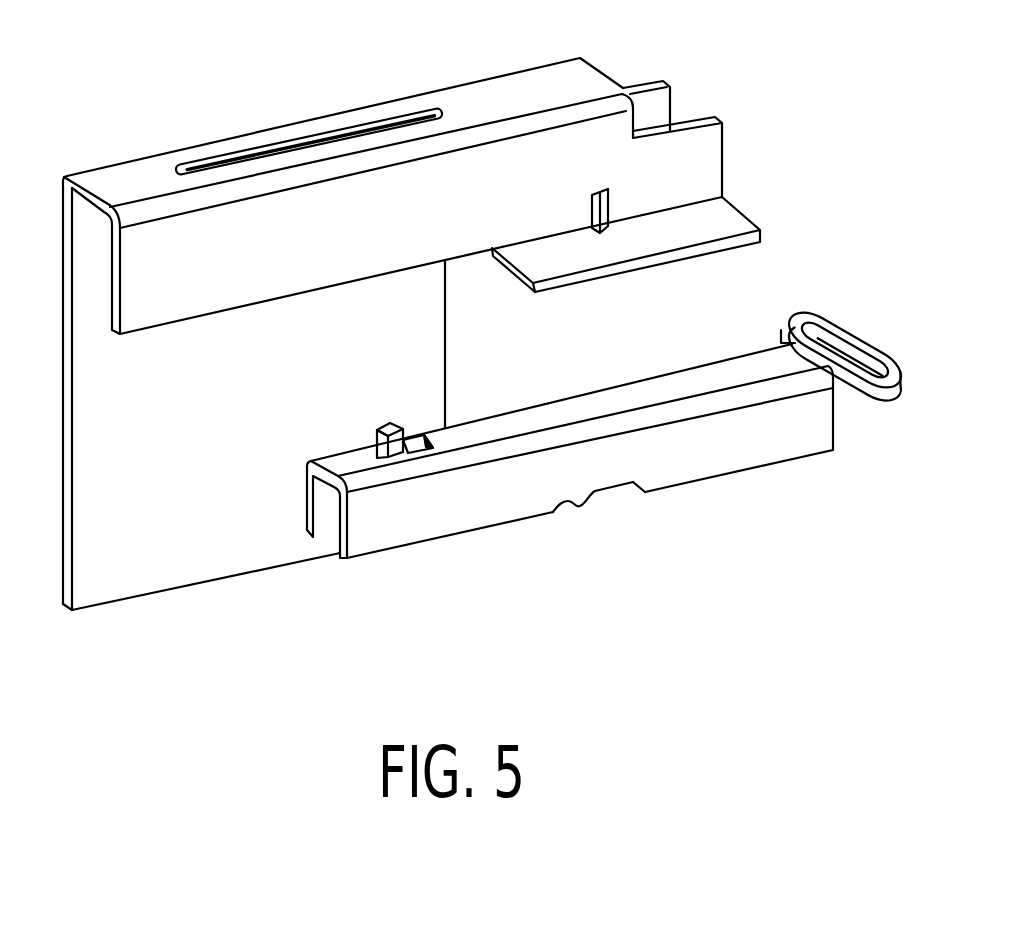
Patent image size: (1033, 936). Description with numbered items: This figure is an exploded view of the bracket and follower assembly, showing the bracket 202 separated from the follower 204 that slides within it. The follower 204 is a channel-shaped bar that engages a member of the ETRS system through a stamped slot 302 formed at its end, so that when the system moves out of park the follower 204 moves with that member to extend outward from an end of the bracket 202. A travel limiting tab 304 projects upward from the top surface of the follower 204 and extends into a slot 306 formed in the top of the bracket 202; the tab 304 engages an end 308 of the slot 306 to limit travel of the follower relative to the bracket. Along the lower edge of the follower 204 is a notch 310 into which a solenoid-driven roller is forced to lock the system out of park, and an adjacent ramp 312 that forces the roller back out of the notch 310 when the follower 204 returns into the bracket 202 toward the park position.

The bracket 202 is at (411, 305).
The follower 204 is at (602, 431).
The stamped slot 302 is at (845, 347).
The travel limiting tab 304 is at (380, 428).
The slot 306 is at (291, 147).
The end of the slot 308 is at (436, 112).
The notch 310 is at (608, 495).
The ramp 312 is at (642, 492).